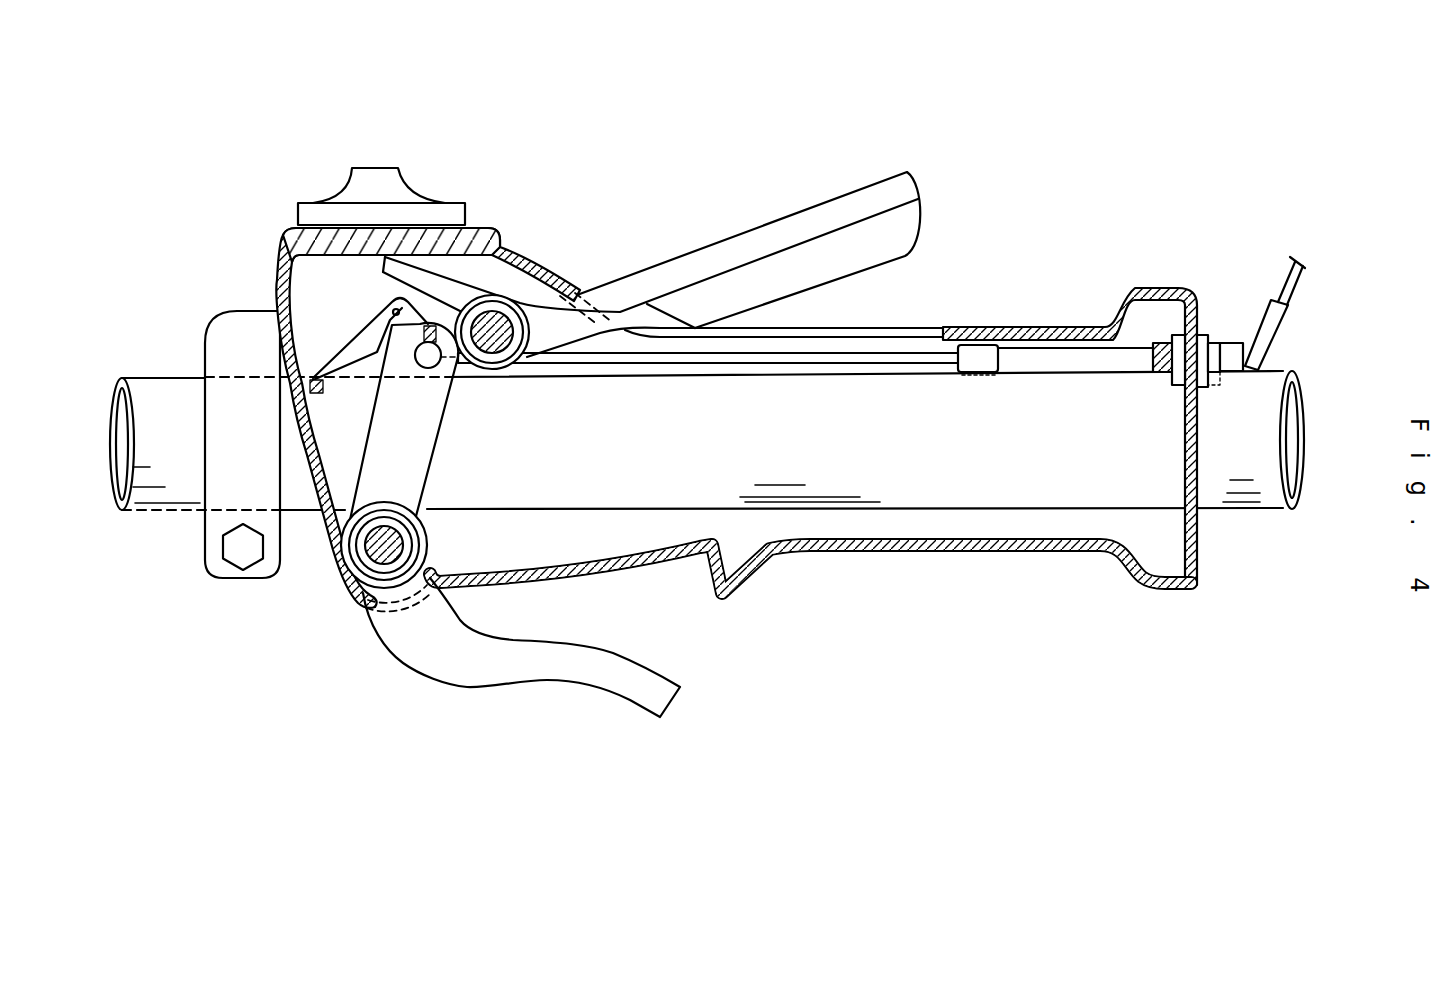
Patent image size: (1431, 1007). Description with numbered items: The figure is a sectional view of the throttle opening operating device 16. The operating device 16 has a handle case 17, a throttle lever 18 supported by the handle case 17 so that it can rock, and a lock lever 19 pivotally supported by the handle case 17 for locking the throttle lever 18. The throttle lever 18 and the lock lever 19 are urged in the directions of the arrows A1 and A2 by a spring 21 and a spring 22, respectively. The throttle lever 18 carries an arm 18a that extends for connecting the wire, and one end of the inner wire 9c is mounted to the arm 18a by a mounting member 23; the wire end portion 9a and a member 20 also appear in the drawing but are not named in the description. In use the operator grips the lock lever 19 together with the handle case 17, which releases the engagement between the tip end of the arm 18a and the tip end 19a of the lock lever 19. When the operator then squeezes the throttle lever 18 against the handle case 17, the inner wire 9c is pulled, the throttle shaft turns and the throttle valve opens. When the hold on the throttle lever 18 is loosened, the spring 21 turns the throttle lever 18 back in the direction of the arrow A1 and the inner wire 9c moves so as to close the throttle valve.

The operating device 16 is at (1052, 322).
The handle case 17 is at (843, 548).
The throttle lever 18 is at (400, 667).
The arm 18a is at (443, 437).
The lock lever 19 is at (707, 243).
The tip end 19a is at (318, 358).
The pipe 20 is at (146, 390).
The spring 21 is at (428, 550).
The spring 22 is at (478, 228).
The mounting member 23 is at (437, 365).
The cable 9a is at (1140, 338).
The inner wire 9c is at (862, 356).
The arrow A1 is at (723, 687).
The arrow A2 is at (953, 205).